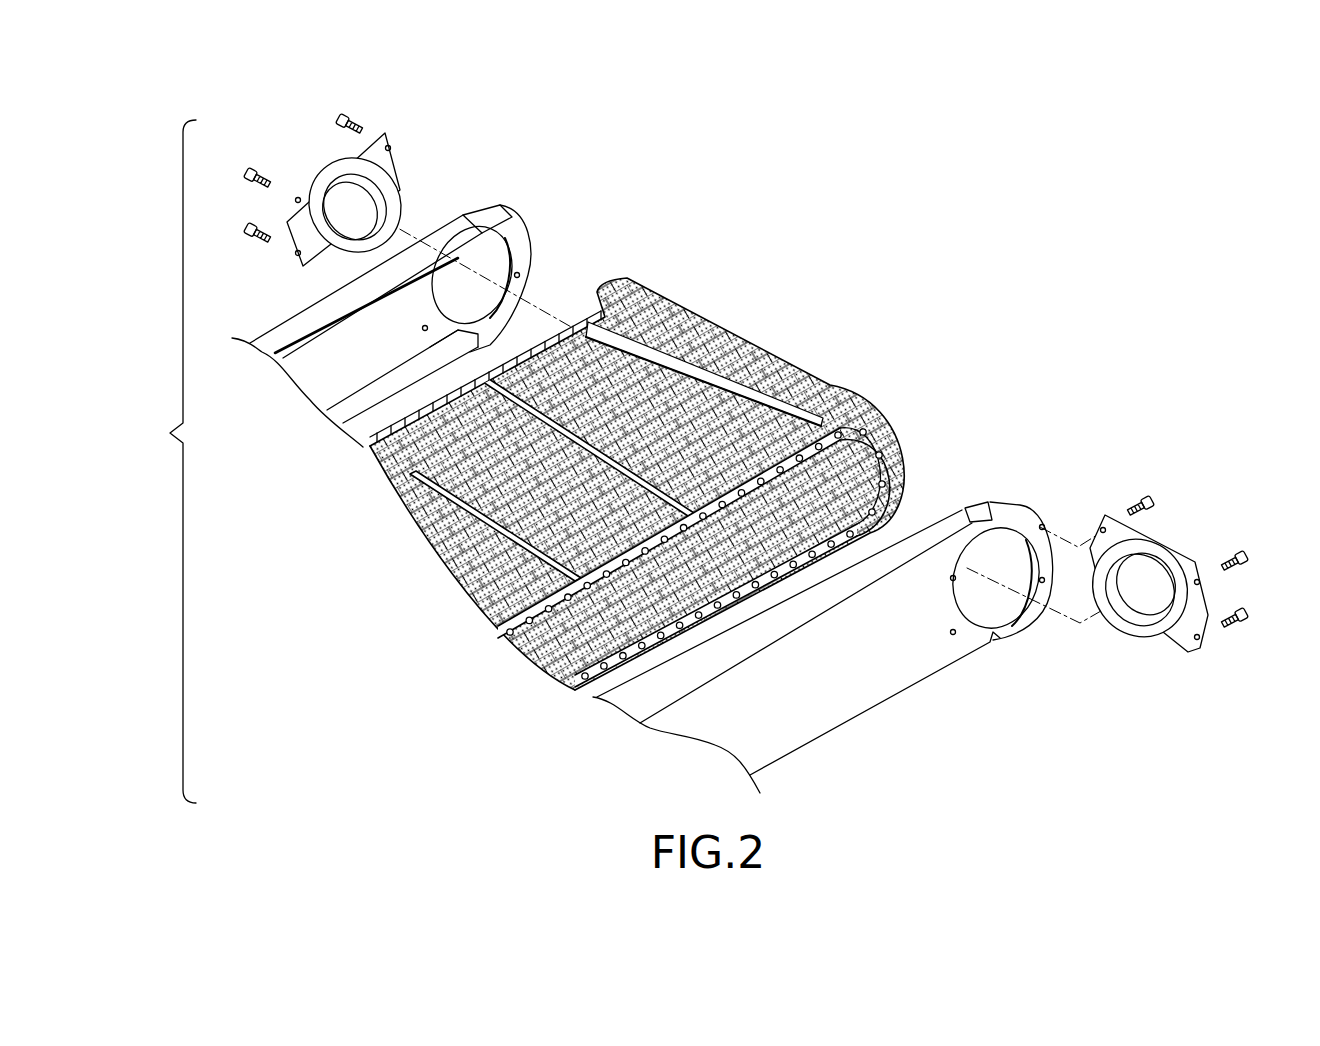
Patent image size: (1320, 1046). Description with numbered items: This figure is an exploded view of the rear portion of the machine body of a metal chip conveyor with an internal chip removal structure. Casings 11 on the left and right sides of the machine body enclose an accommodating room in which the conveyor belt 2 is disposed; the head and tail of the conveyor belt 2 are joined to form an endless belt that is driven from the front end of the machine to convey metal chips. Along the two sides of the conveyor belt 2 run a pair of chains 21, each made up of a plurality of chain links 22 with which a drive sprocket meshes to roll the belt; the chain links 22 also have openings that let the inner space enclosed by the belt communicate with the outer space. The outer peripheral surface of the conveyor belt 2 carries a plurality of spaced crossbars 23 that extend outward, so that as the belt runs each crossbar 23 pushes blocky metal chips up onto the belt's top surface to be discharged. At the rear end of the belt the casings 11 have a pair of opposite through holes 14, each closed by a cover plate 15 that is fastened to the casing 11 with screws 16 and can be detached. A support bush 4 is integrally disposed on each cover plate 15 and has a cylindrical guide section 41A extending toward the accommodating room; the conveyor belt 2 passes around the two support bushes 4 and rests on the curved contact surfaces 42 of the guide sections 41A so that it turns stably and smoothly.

The conveyor belt 2 is at (633, 347).
The support bush 4 is at (749, 415).
The casing 11 is at (328, 358).
The through hole 14 is at (497, 248).
The cover plate 15 is at (321, 176).
The screw 16 is at (342, 120).
The chain 21 is at (878, 446).
The chain link 22 is at (822, 425).
The crossbar 23 is at (575, 326).
The guide section 41A is at (392, 184).
The curved contact surface 42 is at (390, 146).